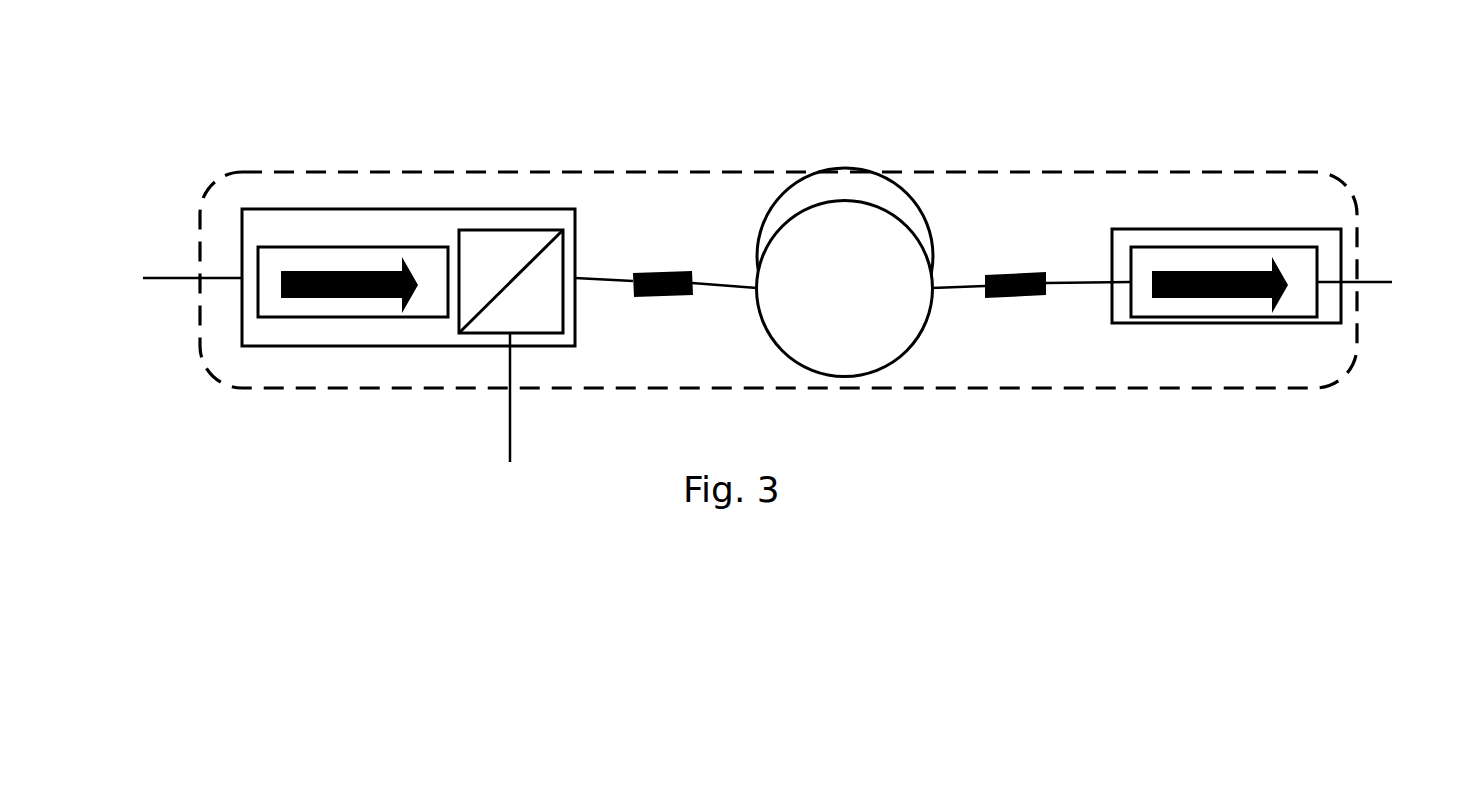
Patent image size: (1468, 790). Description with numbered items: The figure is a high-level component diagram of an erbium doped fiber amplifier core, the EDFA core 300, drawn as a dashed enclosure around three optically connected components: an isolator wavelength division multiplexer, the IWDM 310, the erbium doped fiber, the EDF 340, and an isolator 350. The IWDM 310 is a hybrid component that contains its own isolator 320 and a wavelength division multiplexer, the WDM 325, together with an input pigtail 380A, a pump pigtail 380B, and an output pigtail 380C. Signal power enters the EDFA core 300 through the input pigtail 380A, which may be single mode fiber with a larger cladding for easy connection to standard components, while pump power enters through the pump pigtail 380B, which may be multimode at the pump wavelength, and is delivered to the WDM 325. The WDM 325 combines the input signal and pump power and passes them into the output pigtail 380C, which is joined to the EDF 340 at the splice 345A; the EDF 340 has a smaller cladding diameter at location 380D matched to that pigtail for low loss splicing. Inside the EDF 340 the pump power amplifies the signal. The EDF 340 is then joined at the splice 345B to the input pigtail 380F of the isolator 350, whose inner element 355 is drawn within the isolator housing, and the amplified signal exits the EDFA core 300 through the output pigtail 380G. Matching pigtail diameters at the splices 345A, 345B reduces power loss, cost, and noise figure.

The erbium doped fiber amplifier (EDFA) core 300 is at (210, 52).
The isolator wavelength division multiplexer (IWDM) 310 is at (358, 209).
The isolator 320 is at (365, 247).
The wavelength division multiplexer (WDM) 325 is at (510, 230).
The erbium doped fiber (EDF) 340 is at (845, 272).
The splice 345A is at (662, 296).
The splice 345B is at (1006, 296).
The isolator 350 is at (1220, 229).
The isolator core 355 is at (1178, 247).
The input pigtail 380A is at (178, 278).
The pump pigtail 380B is at (510, 446).
The output pigtail 380C is at (615, 279).
The EDF cladding location 380D is at (730, 287).
The input pigtail 380F is at (1093, 283).
The output pigtail 380G is at (1360, 282).